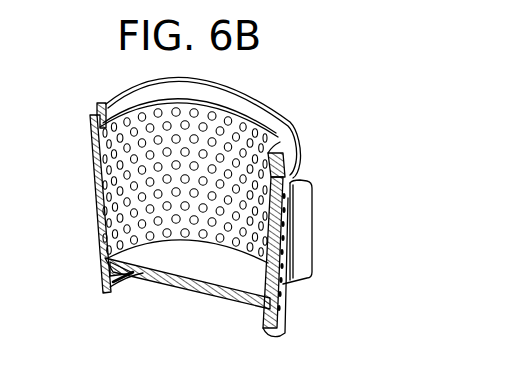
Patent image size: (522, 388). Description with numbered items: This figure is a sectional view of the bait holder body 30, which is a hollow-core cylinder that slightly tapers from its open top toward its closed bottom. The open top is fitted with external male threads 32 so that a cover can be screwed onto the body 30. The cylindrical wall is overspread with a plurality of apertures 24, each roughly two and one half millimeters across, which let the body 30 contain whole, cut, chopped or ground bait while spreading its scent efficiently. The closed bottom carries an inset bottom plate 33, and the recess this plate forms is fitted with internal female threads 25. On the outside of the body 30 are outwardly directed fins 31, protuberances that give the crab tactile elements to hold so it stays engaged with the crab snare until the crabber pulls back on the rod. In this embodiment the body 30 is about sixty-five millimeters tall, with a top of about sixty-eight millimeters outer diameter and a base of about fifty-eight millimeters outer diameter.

The body 30 is at (83, 225).
The fins 31 is at (299, 230).
The external male threads 32 is at (296, 139).
The inset bottom plate 33 is at (213, 296).
The apertures 24 is at (279, 292).
The internal female threads 25 is at (115, 293).